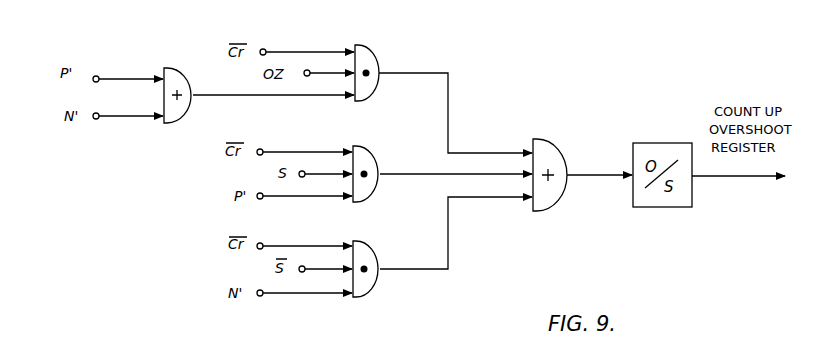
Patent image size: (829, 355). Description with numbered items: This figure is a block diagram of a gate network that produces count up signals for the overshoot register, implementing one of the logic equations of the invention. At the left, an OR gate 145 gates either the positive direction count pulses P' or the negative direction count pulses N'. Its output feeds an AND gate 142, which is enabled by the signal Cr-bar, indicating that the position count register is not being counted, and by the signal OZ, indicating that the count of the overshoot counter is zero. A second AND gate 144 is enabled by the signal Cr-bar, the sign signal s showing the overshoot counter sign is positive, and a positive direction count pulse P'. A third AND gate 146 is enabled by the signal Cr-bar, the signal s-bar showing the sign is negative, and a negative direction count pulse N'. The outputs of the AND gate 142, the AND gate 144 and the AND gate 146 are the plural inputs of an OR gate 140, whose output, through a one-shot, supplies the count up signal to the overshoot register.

The OR gate 140 is at (550, 147).
The AND gate 142 is at (372, 52).
The AND gate 144 is at (371, 146).
The OR gate 145 is at (172, 68).
The AND gate 146 is at (373, 241).